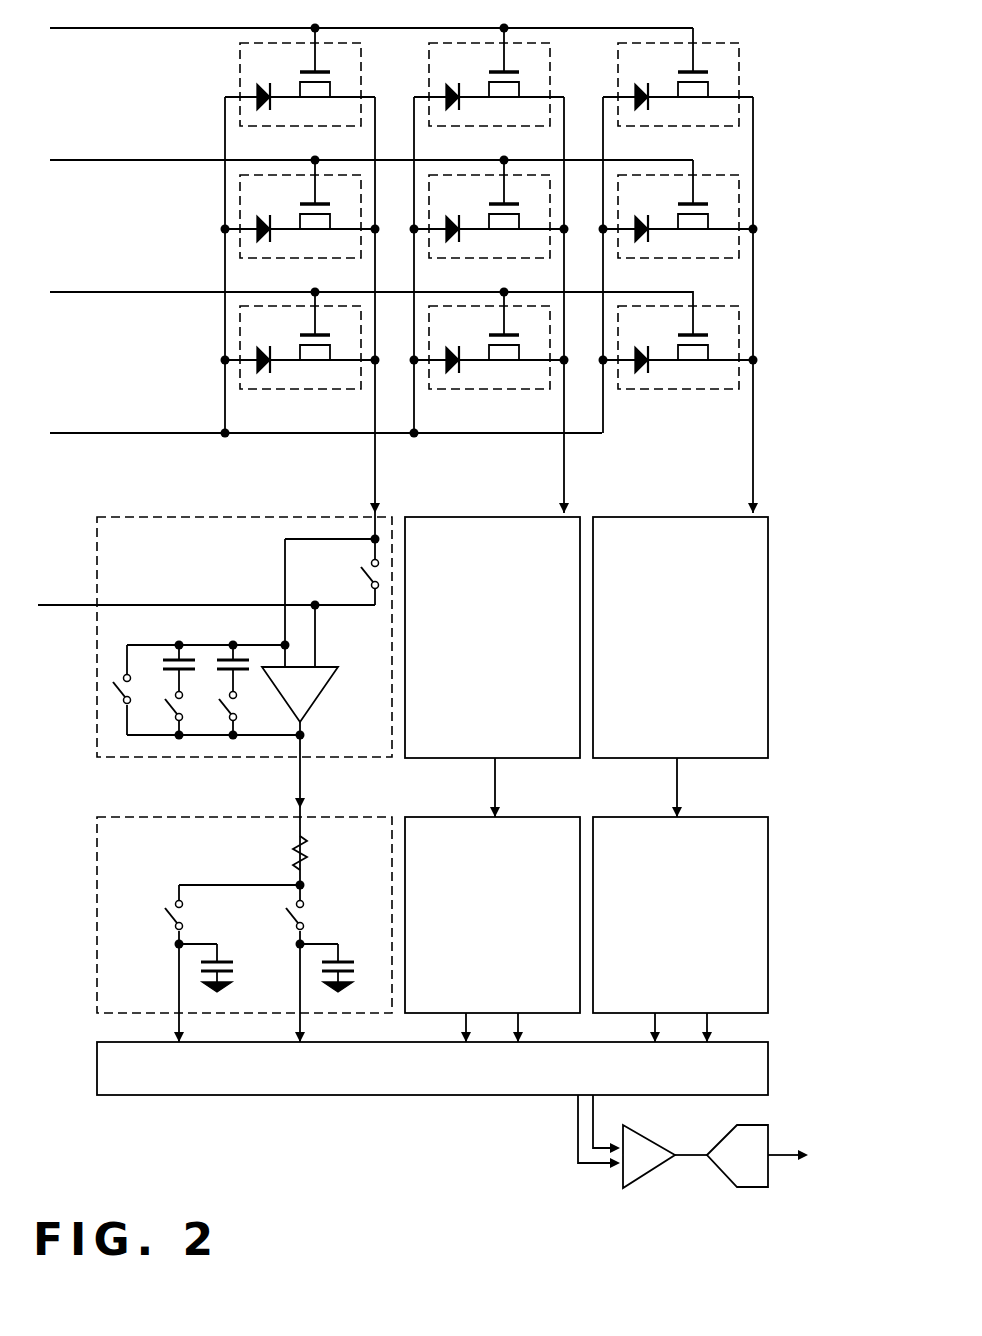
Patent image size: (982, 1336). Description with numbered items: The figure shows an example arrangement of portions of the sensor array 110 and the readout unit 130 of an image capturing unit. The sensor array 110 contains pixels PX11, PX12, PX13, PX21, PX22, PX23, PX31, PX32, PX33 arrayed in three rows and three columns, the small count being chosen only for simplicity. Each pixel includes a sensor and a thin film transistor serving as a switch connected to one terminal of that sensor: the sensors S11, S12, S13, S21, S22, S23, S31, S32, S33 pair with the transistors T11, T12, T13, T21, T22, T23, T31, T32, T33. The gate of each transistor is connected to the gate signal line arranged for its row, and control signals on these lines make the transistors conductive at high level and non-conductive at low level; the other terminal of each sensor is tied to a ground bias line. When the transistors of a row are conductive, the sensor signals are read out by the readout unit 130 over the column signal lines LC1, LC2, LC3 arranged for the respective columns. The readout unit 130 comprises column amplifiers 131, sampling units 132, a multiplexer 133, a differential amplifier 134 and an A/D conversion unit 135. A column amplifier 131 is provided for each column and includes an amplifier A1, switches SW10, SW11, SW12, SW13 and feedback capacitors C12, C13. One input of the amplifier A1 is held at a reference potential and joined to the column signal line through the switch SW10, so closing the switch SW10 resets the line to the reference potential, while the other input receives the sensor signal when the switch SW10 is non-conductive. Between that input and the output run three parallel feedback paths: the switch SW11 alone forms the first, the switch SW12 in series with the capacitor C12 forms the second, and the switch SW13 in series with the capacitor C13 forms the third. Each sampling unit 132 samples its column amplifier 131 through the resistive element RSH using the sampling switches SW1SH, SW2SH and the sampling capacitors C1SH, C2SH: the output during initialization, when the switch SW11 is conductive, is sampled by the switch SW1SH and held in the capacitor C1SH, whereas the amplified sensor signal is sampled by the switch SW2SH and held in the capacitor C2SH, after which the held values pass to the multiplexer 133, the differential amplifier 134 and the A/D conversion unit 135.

The sensor array 110 is at (463, 273).
The readout unit 130 is at (810, 522).
The column amplifier 131 is at (403, 701).
The sampling unit 132 is at (432, 929).
The multiplexer 133 is at (432, 1105).
The differential amplifier 134 is at (660, 1167).
The analog-to-digital conversion unit 135 is at (753, 1188).
The pixel PX11 is at (271, 77).
The pixel PX12 is at (489, 93).
The pixel PX13 is at (678, 93).
The pixel PX21 is at (271, 209).
The pixel PX22 is at (489, 225).
The pixel PX23 is at (678, 225).
The pixel PX31 is at (271, 340).
The pixel PX32 is at (489, 356).
The pixel PX33 is at (678, 356).
The sensor S11 is at (271, 76).
The sensor S12 is at (460, 76).
The sensor S13 is at (649, 76).
The sensor S21 is at (271, 208).
The sensor S22 is at (460, 208).
The sensor S23 is at (649, 208).
The sensor S31 is at (271, 339).
The sensor S32 is at (460, 339).
The sensor S33 is at (649, 339).
The thin film transistor T11 is at (320, 73).
The thin film transistor T12 is at (509, 73).
The thin film transistor T13 is at (698, 73).
The thin film transistor T21 is at (320, 205).
The thin film transistor T22 is at (509, 205).
The thin film transistor T23 is at (698, 205).
The thin film transistor T31 is at (320, 336).
The thin film transistor T32 is at (509, 336).
The thin film transistor T33 is at (698, 336).
The column signal line LC1 is at (375, 470).
The column signal line LC2 is at (564, 470).
The column signal line LC3 is at (753, 470).
The switch SW10 is at (338, 572).
The switch SW11 is at (115, 697).
The switch SW12 is at (165, 710).
The switch SW13 is at (220, 710).
The feedback capacitor C12 is at (162, 660).
The feedback capacitor C13 is at (217, 660).
The amplifier A1 is at (320, 695).
The resistive element RSH is at (276, 853).
The sampling switch SW1SH is at (167, 917).
The sampling switch SW2SH is at (340, 895).
The sampling capacitor C1SH is at (222, 964).
The sampling capacitor C2SH is at (332, 958).